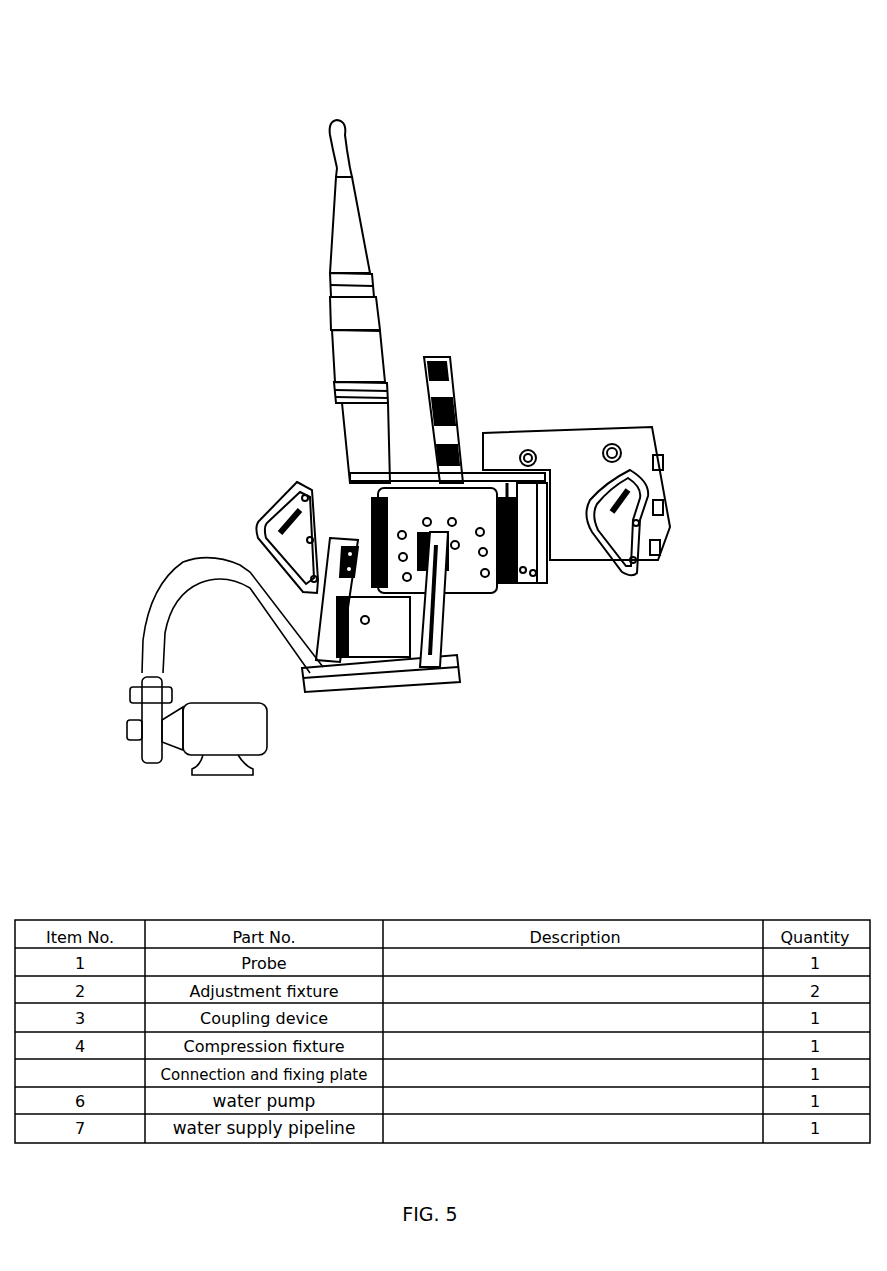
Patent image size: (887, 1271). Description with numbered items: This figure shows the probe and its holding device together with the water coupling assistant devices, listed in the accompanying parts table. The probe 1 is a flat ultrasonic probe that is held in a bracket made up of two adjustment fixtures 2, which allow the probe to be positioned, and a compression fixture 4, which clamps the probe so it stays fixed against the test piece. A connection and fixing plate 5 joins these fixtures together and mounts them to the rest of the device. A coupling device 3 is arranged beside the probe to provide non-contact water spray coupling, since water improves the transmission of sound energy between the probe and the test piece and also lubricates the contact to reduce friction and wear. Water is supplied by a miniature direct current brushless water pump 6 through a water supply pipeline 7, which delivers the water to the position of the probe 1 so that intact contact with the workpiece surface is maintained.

The probe 1 is at (350, 245).
The adjustment fixture 2 is at (295, 483).
The coupling device 3 is at (327, 657).
The compression fixture 4 is at (520, 578).
The connection and fixing plate 5 is at (310, 720).
The water pump 6 is at (238, 785).
The water supply pipeline 7 is at (142, 627).